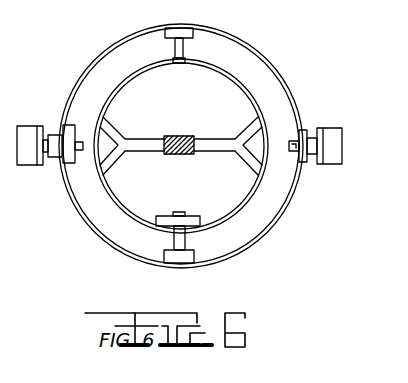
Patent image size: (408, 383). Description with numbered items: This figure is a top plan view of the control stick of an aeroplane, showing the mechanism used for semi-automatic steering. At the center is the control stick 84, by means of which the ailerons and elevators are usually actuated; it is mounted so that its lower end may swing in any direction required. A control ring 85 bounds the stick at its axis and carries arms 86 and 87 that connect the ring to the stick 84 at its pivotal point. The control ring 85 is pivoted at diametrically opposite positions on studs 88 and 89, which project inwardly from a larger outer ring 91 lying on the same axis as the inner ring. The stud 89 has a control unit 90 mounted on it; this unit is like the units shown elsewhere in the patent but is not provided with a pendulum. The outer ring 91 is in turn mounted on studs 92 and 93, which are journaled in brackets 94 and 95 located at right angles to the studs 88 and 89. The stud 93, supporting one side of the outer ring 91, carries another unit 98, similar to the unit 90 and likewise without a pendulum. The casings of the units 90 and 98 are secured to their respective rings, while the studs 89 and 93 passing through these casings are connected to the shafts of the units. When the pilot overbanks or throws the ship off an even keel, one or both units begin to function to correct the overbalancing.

The control stick 84 is at (186, 138).
The control ring 85 is at (260, 105).
The arm 86 is at (132, 151).
The arm 87 is at (243, 158).
The stud 88 is at (180, 50).
The stud 89 is at (180, 240).
The unit 90 is at (165, 220).
The outer ring 91 is at (281, 208).
The stud 92 is at (293, 151).
The stud 93 is at (82, 151).
The bracket 94 is at (331, 143).
The bracket 95 is at (28, 152).
The unit 98 is at (70, 127).